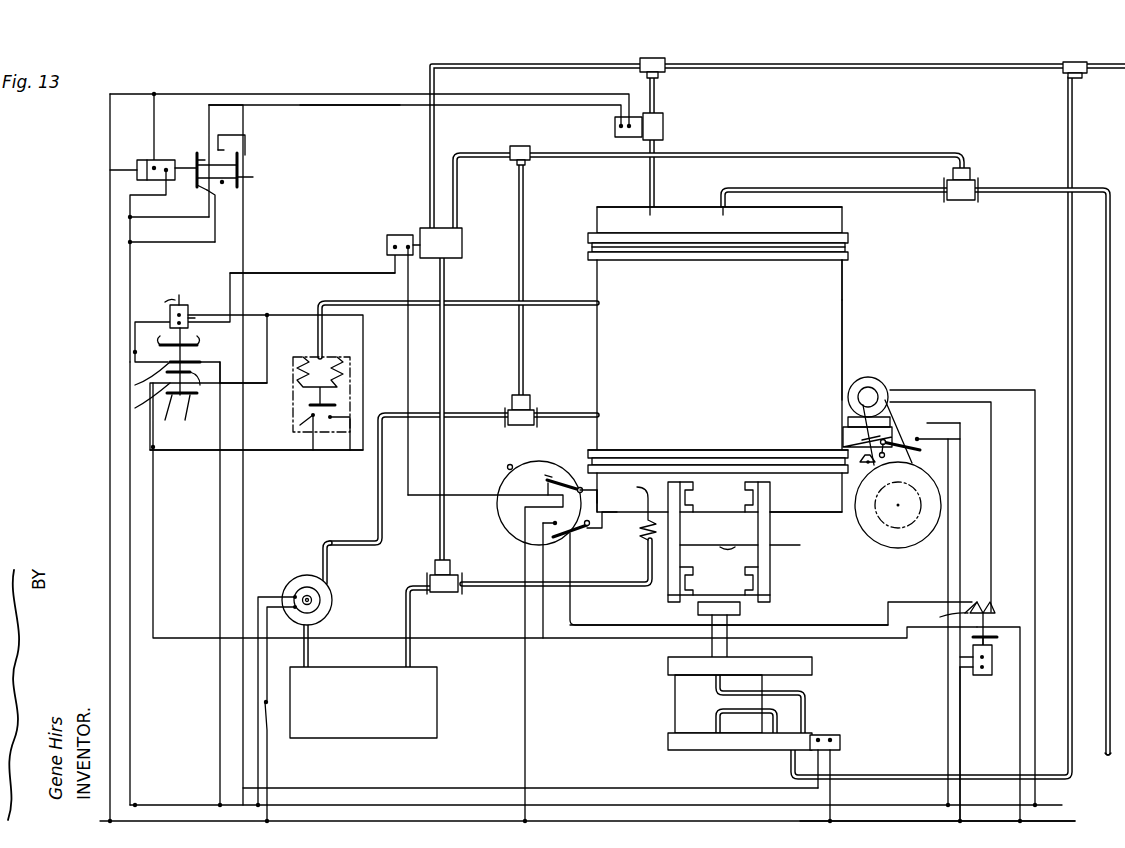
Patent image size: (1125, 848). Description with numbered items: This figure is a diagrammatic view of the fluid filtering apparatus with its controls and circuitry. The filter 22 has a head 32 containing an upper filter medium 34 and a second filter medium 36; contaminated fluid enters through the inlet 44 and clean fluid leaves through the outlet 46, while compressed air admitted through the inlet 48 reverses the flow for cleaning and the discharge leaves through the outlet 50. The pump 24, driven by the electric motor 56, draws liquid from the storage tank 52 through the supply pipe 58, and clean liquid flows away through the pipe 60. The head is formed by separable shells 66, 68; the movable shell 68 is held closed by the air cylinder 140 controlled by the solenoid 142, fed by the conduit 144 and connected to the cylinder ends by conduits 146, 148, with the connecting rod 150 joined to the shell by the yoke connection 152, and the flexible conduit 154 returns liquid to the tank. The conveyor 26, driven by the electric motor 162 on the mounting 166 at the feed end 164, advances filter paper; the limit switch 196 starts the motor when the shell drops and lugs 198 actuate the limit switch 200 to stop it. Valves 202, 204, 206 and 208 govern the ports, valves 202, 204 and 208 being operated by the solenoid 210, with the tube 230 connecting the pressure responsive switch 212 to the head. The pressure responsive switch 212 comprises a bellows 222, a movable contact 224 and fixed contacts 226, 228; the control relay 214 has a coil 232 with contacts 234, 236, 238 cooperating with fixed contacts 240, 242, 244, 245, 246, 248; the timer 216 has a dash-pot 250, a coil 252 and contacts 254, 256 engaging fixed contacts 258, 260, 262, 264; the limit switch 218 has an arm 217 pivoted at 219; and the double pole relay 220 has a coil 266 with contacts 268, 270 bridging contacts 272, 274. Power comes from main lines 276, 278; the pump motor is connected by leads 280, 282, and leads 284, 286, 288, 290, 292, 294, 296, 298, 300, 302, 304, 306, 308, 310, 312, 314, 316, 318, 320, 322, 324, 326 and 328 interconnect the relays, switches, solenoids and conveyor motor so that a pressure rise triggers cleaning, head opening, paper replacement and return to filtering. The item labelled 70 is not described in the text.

The filter 22 is at (866, 225).
The pump 24 is at (332, 597).
The conveyor 26 is at (952, 468).
The head 32 is at (856, 298).
The filter medium 34 is at (752, 250).
The second filter medium 36 is at (728, 458).
The inlet 44 is at (610, 412).
The outlet 46 is at (725, 210).
The inlet 48 is at (648, 208).
The outlet 50 is at (640, 490).
The storage tank 52 is at (430, 710).
The electric motor 56 is at (300, 587).
The supply pipe 58 is at (333, 540).
The pipe 60 is at (790, 190).
The shell 66 is at (830, 348).
The movable shell 68 is at (828, 512).
The tank cover 70 is at (677, 207).
The air cylinder 140 is at (668, 706).
The solenoid 142 is at (815, 733).
The conduit 144 is at (880, 780).
The conduit 146 is at (800, 692).
The conduit 148 is at (746, 722).
The connecting rod 150 is at (728, 650).
The yoke connection 152 is at (770, 580).
The flexible conduit 154 is at (595, 590).
The electric motor 162 is at (880, 386).
The feed end 164 is at (930, 520).
The mounting 166 is at (848, 420).
The limit switch 196 is at (582, 548).
The lugs 198 is at (508, 464).
The limit switch 200 is at (908, 420).
The valve 202 is at (532, 400).
The valve 204 is at (975, 200).
The valve 206 is at (668, 127).
The valve 208 is at (444, 598).
The solenoid 210 is at (465, 240).
The pressure responsive switch 212 is at (357, 340).
The control relay 214 is at (186, 288).
The timer 216 is at (257, 162).
The arm 217 is at (545, 480).
The limit switch 218 is at (557, 469).
The pivot 219 is at (616, 469).
The double pole relay 220 is at (1011, 594).
The bellows 222 is at (340, 370).
The movable contact 224 is at (330, 405).
The fixed contact 226 is at (335, 418).
The fixed contact 228 is at (284, 427).
The tube 230 is at (322, 320).
The coil 232 is at (157, 290).
The contact 234 is at (192, 320).
The contact 236 is at (194, 392).
The contact 238 is at (176, 413).
The fixed contact 240 is at (205, 345).
The fixed contact 242 is at (166, 334).
The fixed contact 244 is at (225, 362).
The fixed contact 245 is at (115, 375).
The contact 246 is at (182, 415).
The contact 248 is at (115, 398).
The dash-pot 250 is at (115, 172).
The coil 252 is at (160, 157).
The contact 254 is at (196, 183).
The contact 256 is at (265, 176).
The fixed contact 258 is at (200, 153).
The fixed contact 260 is at (214, 198).
The fixed contact 262 is at (224, 184).
The fixed contact 264 is at (225, 153).
The coil 266 is at (982, 676).
The contact 268 is at (936, 611).
The contact 270 is at (972, 657).
The contacts 272 is at (974, 588).
The contacts 274 is at (1000, 622).
The main line 276 is at (565, 805).
The main line 278 is at (610, 821).
The lead 280 is at (262, 765).
The lead 282 is at (270, 790).
The lead 284 is at (115, 738).
The lead 286 is at (272, 345).
The lead 288 is at (258, 450).
The lead 290 is at (1020, 743).
The lead 292 is at (155, 450).
The lead 294 is at (235, 395).
The lead 296 is at (135, 352).
The lead 298 is at (288, 273).
The lead 300 is at (402, 300).
The lead 302 is at (525, 740).
The lead 304 is at (215, 670).
The lead 306 is at (115, 278).
The lead 308 is at (110, 230).
The lead 310 is at (160, 108).
The lead 312 is at (155, 242).
The lead 314 is at (375, 118).
The lead 316 is at (148, 253).
The lead 318 is at (248, 252).
The lead 320 is at (830, 790).
The lead 322 is at (1035, 510).
The lead 324 is at (992, 488).
The lead 326 is at (810, 625).
The lead 328 is at (545, 640).